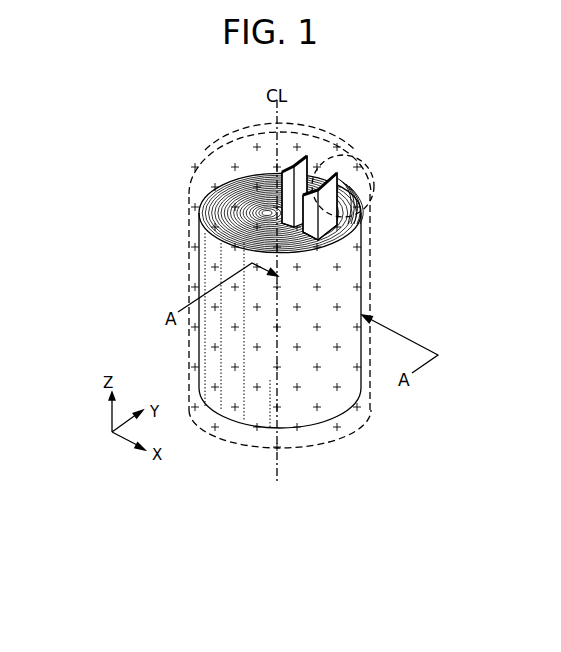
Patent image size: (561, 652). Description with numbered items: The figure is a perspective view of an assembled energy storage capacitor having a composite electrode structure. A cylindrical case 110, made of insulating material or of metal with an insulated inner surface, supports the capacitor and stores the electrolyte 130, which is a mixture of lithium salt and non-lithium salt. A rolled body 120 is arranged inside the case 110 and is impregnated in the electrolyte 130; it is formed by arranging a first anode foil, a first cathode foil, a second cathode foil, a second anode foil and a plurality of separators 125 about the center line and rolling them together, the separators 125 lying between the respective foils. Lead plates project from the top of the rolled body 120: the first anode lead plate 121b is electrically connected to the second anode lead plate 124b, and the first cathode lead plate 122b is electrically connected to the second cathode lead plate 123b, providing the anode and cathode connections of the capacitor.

The case 110 is at (200, 167).
The rolled body 120 is at (192, 270).
The electrolyte 130 is at (260, 148).
The first anode lead plate 121b is at (314, 218).
The first cathode lead plate 122b is at (312, 157).
The second cathode lead plate 123b is at (322, 187).
The second anode lead plate 124b is at (355, 204).
The separators 125 is at (323, 272).